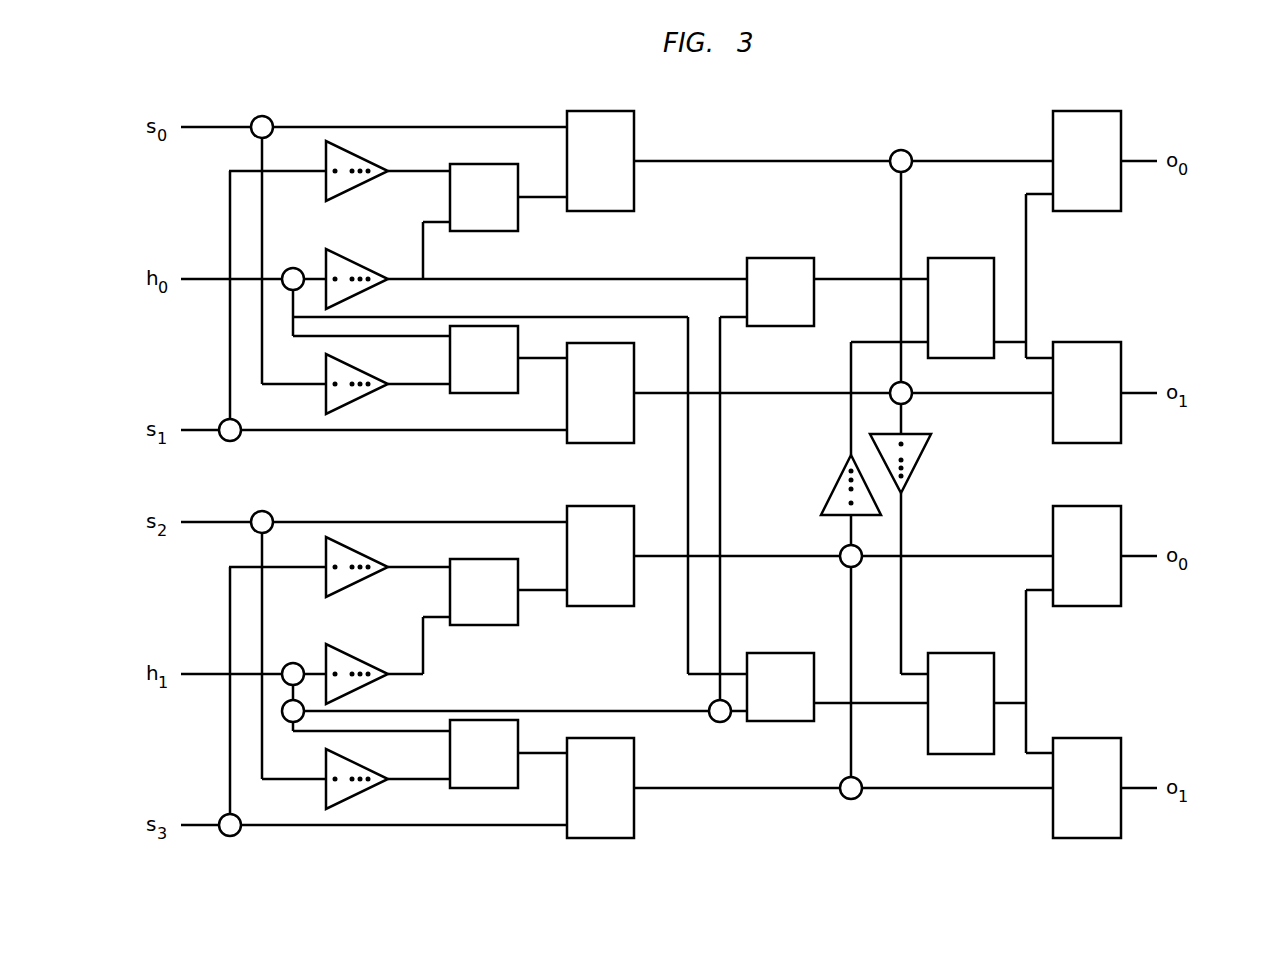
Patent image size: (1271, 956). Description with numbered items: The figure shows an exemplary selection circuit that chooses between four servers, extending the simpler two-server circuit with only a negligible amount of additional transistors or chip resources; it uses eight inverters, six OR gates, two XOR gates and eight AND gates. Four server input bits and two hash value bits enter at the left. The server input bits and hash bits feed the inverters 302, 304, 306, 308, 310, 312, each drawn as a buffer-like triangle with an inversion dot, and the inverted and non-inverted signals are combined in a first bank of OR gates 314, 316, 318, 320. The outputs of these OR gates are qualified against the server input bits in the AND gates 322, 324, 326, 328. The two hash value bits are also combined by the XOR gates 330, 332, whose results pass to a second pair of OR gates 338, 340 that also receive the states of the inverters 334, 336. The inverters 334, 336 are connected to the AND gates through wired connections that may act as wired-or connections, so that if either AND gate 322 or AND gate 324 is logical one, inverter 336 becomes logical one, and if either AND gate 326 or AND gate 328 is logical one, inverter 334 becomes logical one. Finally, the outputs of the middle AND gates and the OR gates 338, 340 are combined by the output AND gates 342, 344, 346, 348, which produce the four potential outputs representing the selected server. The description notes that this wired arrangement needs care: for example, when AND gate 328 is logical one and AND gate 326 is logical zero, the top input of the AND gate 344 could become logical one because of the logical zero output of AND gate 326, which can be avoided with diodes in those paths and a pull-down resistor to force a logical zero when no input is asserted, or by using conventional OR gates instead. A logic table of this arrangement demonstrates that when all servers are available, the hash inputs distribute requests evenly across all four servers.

The inverter 302 is at (372, 165).
The inverter 304 is at (372, 272).
The inverter 306 is at (372, 378).
The inverter 308 is at (372, 560).
The inverter 310 is at (372, 666).
The inverter 312 is at (372, 773).
The OR gate 314 is at (492, 165).
The OR gate 316 is at (492, 326).
The OR gate 318 is at (492, 560).
The OR gate 320 is at (492, 720).
The AND gate 322 is at (637, 129).
The AND gate 324 is at (637, 361).
The AND gate 326 is at (637, 524).
The AND gate 328 is at (637, 756).
The XOR gate 330 is at (790, 258).
The XOR gate 332 is at (790, 653).
The inverter 334 is at (829, 517).
The inverter 336 is at (922, 433).
The OR gate 338 is at (970, 258).
The OR gate 340 is at (970, 653).
The AND gate 342 is at (1124, 129).
The AND gate 344 is at (1124, 360).
The AND gate 346 is at (1124, 524).
The AND gate 348 is at (1124, 756).